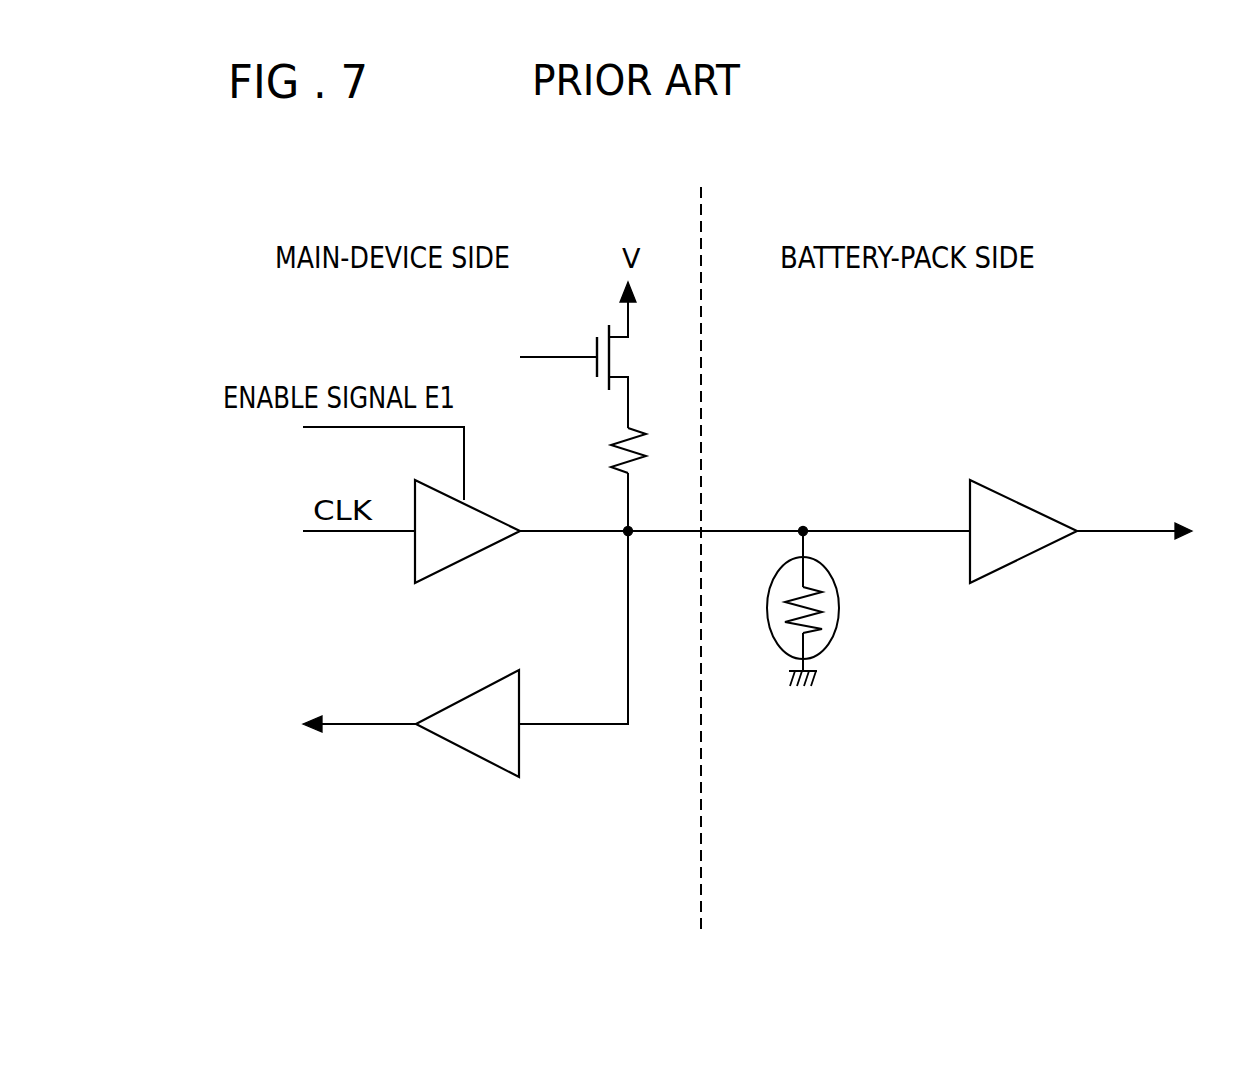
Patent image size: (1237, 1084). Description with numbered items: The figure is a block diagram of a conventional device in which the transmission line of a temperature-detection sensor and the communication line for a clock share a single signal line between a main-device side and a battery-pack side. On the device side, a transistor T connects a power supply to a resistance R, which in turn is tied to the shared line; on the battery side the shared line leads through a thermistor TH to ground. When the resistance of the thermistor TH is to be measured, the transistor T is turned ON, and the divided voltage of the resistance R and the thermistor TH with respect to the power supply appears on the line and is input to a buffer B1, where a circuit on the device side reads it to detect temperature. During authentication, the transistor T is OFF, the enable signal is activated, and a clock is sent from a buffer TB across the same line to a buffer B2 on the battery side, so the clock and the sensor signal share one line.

The buffer TB is at (470, 505).
The transistor T is at (598, 355).
The resistance R is at (647, 479).
The buffer B1 is at (495, 675).
The buffer B2 is at (1032, 508).
The thermistor TH is at (778, 608).